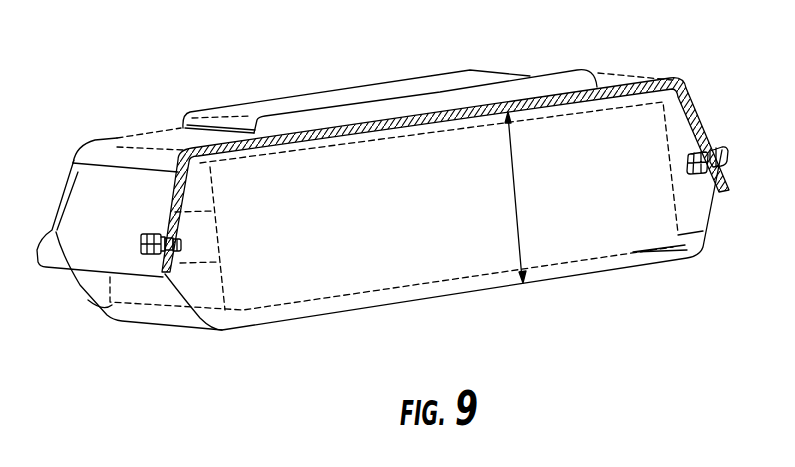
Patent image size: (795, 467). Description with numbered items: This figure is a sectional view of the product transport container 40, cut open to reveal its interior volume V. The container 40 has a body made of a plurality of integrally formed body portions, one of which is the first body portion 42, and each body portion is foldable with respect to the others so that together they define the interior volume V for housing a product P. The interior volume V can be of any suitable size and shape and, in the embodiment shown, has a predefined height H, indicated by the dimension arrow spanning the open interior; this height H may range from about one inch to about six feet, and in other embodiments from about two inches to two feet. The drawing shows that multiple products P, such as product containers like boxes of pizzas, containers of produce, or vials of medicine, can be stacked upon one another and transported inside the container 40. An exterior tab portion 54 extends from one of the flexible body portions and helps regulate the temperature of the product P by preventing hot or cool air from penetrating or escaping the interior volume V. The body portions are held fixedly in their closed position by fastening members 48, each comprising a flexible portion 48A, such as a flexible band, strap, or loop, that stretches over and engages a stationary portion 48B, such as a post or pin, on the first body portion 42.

The product transport container 40 is at (172, 103).
The first body portion 42 is at (99, 198).
The tab portion 54 is at (370, 107).
The fastening member 48 is at (700, 176).
The flexible portion 48A is at (165, 233).
The stationary portion 48B is at (140, 243).
The interior volume V is at (682, 127).
The height H is at (517, 207).
The product P is at (198, 198).